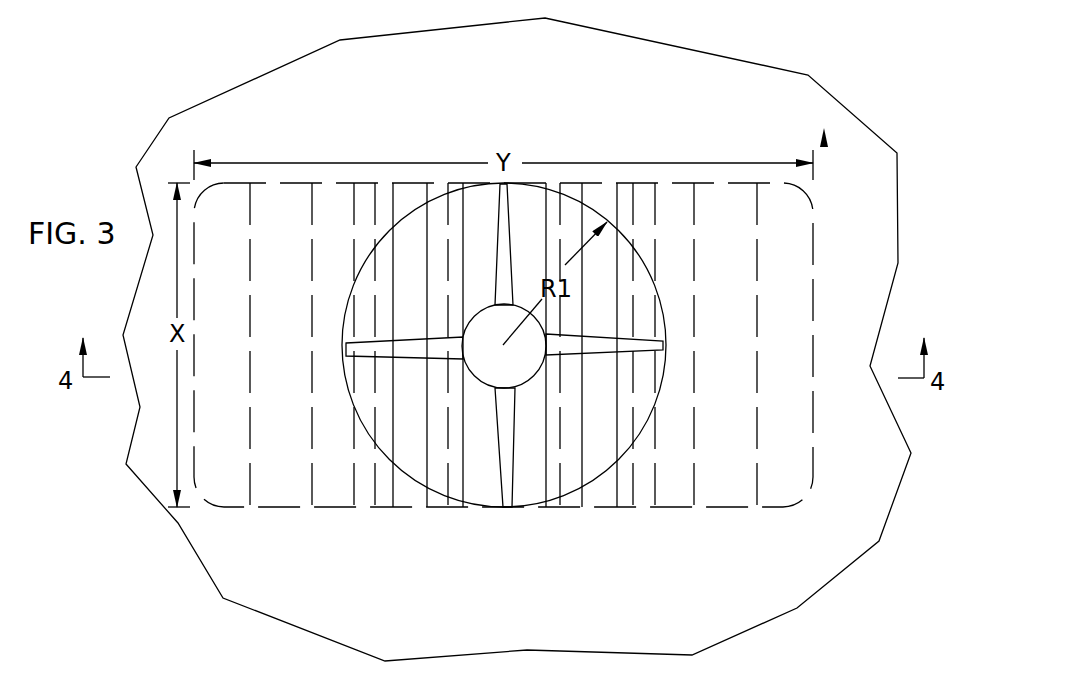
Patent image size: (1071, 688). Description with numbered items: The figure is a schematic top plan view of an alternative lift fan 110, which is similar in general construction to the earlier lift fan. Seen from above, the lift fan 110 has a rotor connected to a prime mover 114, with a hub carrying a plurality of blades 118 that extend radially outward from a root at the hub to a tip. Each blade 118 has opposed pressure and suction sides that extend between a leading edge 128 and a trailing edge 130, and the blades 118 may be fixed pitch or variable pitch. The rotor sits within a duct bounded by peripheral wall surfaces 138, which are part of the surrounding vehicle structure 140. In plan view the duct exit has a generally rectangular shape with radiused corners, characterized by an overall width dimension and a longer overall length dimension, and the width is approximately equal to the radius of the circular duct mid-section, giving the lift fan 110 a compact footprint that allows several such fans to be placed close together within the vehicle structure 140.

The lift fan 110 is at (655, 92).
The prime mover 114 is at (488, 318).
The blades 118 is at (663, 345).
The leading edge 128 is at (644, 332).
The trailing edge 130 is at (603, 350).
The peripheral wall surfaces 138 is at (813, 247).
The vehicle structure 140 is at (804, 587).